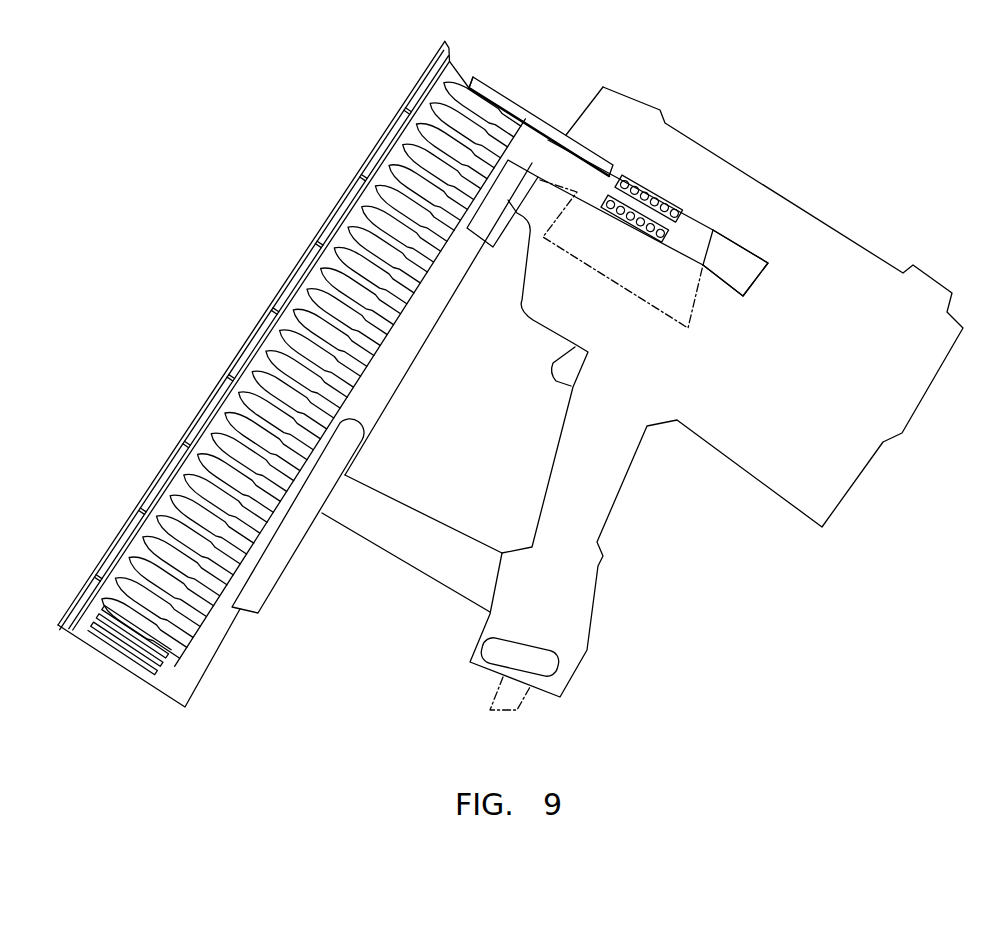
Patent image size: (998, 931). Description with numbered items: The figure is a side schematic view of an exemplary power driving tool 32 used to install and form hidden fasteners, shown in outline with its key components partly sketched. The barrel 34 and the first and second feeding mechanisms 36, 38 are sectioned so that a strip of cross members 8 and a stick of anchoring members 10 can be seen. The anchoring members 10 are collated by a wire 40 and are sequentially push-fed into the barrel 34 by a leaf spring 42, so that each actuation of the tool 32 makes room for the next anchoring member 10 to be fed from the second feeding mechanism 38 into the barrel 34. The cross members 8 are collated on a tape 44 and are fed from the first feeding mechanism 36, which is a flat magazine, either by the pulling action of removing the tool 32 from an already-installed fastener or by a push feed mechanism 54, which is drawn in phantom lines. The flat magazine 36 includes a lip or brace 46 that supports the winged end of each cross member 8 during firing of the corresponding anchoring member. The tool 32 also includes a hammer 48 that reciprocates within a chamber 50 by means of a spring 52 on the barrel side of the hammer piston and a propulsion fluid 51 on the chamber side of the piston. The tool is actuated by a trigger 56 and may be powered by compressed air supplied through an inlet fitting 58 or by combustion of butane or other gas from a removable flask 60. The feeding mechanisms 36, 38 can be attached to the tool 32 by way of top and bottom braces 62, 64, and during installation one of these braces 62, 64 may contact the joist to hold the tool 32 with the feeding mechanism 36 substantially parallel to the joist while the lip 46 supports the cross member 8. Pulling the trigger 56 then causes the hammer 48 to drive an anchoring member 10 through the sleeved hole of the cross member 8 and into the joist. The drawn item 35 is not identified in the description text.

The cross member 8 is at (443, 50).
The anchoring member 10 is at (458, 80).
The power driving tool 32 is at (732, 166).
The barrel 34 is at (560, 124).
The bar end 35 is at (473, 74).
The first feeding mechanism 36 is at (402, 108).
The second feeding mechanism 38 is at (415, 322).
The wire 40 is at (350, 372).
The leaf spring 42 is at (120, 667).
The tape 44 is at (338, 205).
The lip or brace 46 is at (418, 76).
The hammer 48 is at (700, 233).
The chamber 50 is at (732, 255).
The propulsion fluid 51 is at (735, 263).
The spring 52 is at (656, 192).
The push feed mechanism 54 is at (616, 266).
The trigger 56 is at (553, 365).
The inlet fitting 58 is at (513, 708).
The removable flask 60 is at (542, 674).
The top brace 62 is at (497, 248).
The bottom brace 64 is at (395, 540).